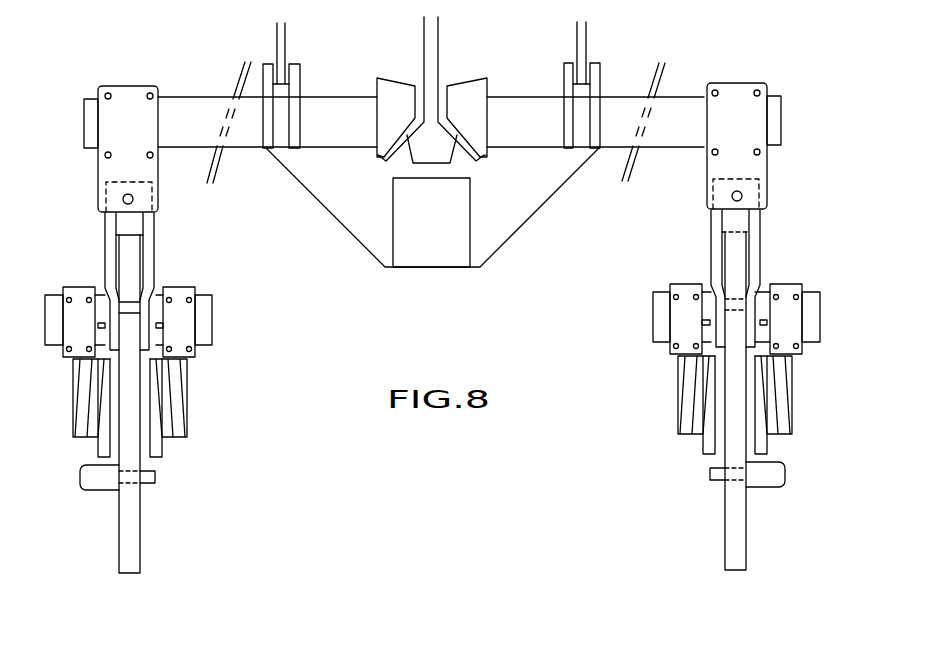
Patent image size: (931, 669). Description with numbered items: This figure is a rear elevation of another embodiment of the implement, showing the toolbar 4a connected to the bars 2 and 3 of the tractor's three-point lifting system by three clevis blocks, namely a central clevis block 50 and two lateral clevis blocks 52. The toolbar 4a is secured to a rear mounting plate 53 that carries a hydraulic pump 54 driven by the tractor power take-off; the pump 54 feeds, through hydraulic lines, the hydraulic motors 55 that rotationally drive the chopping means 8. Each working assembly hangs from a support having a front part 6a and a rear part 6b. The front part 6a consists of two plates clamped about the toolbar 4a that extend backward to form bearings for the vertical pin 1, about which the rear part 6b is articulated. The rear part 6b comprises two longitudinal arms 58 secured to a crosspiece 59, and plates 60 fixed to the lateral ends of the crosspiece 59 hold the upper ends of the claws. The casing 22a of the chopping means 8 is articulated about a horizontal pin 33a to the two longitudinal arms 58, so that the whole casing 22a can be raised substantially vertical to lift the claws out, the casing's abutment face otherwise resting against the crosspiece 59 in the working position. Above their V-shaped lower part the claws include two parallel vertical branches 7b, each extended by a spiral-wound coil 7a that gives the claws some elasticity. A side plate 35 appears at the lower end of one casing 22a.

The vertical pin 1 is at (123, 199).
The bar of the three-point lifting system 2 is at (423, 33).
The bar of the three-point lifting system 3 is at (277, 40).
The toolbar 4a is at (540, 80).
The front part of the support 6a is at (131, 108).
The rear part of the support 6b is at (192, 249).
The spiral-wound coil 7a is at (175, 395).
The parallel vertical branch 7b is at (155, 447).
The chopping means 8 is at (188, 478).
The casing 22a is at (128, 560).
The horizontal pin 33a is at (155, 318).
The side plate 35 is at (770, 480).
The central clevis block 50 is at (449, 66).
The lateral clevis block 52 is at (302, 75).
The rear mounting plate 53 is at (508, 212).
The hydraulic pump 54 is at (437, 250).
The hydraulic motor 55 is at (107, 480).
The longitudinal arm 58 is at (104, 243).
The crosspiece 59 is at (200, 297).
The plate 60 is at (85, 307).